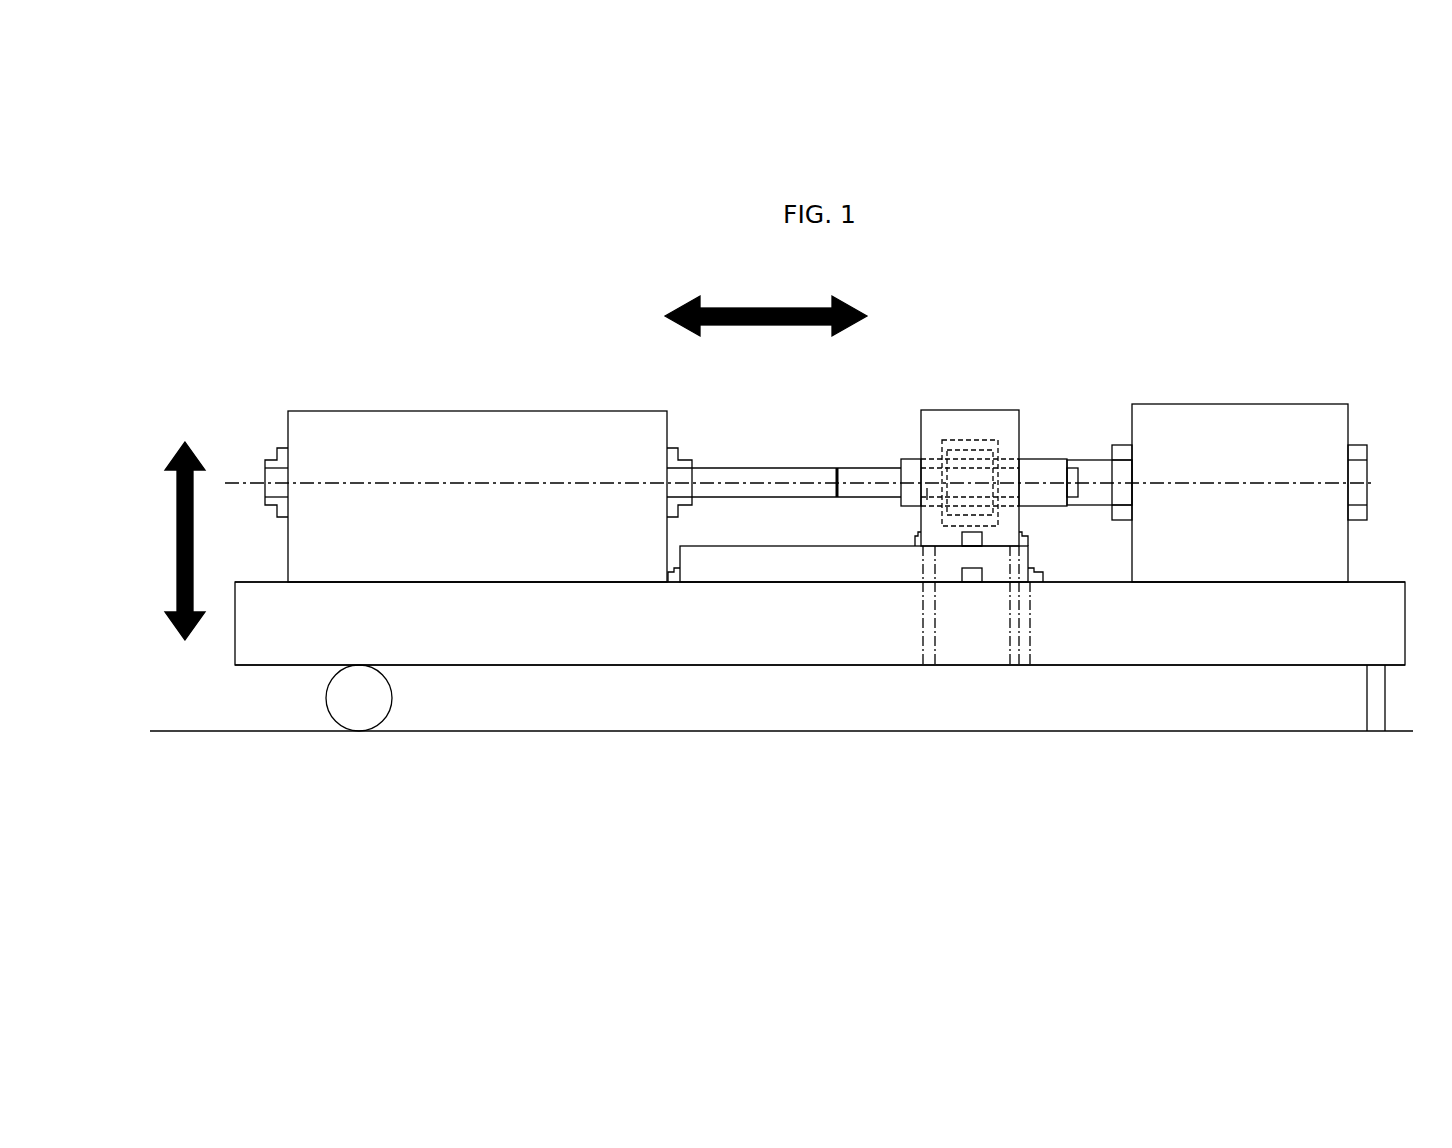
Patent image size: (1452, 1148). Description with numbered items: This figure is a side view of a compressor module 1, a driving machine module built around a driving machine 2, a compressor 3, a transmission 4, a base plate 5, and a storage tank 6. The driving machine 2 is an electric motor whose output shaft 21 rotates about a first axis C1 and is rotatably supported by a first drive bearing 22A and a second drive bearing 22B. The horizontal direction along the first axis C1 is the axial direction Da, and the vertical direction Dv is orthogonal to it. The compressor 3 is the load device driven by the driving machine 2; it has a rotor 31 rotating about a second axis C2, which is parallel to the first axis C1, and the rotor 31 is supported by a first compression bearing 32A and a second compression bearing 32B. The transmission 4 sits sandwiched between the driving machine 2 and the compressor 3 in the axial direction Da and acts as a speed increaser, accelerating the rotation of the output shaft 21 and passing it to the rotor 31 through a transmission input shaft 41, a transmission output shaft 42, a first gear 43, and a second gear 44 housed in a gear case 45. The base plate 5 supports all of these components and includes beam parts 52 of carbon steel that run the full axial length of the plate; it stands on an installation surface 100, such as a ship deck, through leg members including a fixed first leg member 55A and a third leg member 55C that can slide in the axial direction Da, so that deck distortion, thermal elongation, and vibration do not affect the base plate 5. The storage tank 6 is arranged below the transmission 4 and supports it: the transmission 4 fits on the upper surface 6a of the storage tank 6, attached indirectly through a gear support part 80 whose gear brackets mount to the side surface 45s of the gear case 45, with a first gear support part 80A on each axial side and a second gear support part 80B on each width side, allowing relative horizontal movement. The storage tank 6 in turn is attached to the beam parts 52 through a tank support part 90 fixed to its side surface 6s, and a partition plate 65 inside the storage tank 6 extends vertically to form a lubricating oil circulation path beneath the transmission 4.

The compressor module 1 is at (1258, 332).
The driving machine 2 is at (438, 402).
The compressor 3 is at (1199, 396).
The transmission 4 is at (949, 426).
The base plate 5 is at (1395, 575).
The storage tank 6 is at (757, 538).
The upper surface 6a is at (792, 545).
The side surface 6s is at (665, 565).
The output shaft 21 is at (737, 467).
The first drive bearing 22A is at (273, 450).
The second drive bearing 22B is at (680, 458).
The rotor 31 is at (1100, 460).
The first compression bearing 32A is at (1122, 445).
The second compression bearing 32B is at (1357, 445).
The transmission input shaft 41 is at (891, 466).
The transmission output shaft 42 is at (1052, 459).
The first gear 43 is at (948, 440).
The second gear 44 is at (978, 450).
The gear case 45 is at (1014, 412).
The side surface 45s is at (927, 493).
The beam part 52 is at (392, 582).
The first leg member 55A is at (393, 705).
The third leg member 55C is at (1387, 702).
The partition plate 65 is at (922, 598).
The gear support part 80 is at (1032, 655).
The first gear support part 80A is at (905, 543).
The second gear support part 80B is at (982, 535).
The tank support part 90 is at (660, 585).
The installation surface 100 is at (240, 730).
The first axis C1 is at (552, 480).
The second axis C2 is at (1260, 483).
The axial direction Da is at (766, 304).
The vertical direction Dv is at (167, 541).